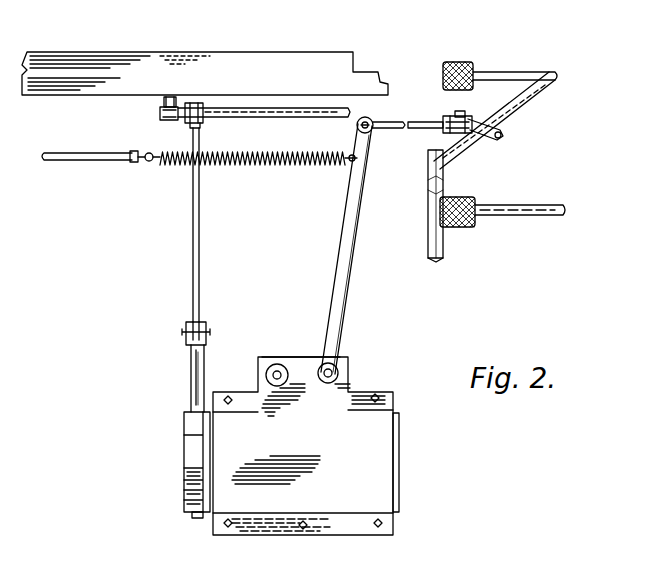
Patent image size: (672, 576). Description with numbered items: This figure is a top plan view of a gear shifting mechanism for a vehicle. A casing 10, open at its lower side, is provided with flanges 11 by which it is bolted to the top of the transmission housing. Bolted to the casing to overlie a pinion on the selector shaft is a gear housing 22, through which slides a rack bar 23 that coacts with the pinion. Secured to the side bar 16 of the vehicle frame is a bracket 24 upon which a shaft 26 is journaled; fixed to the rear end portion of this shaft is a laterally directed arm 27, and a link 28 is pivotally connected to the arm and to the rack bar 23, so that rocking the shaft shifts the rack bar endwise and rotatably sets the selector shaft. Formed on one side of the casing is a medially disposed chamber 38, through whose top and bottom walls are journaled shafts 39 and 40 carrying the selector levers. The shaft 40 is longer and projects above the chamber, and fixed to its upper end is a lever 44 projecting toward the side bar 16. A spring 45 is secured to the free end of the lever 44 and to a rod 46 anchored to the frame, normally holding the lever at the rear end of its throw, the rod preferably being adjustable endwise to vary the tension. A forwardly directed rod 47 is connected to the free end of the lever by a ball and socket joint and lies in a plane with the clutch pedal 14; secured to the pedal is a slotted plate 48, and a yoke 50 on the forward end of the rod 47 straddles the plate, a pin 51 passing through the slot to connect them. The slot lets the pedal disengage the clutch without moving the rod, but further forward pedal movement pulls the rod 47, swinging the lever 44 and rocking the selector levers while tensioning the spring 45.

The casing 10 is at (306, 446).
The flanges 11 is at (390, 397).
The clutch pedal 14 is at (528, 107).
The side bar 16 is at (298, 70).
The gear housing 22 is at (184, 466).
The rack bar 23 is at (196, 368).
The bracket 24 is at (163, 113).
The shaft 26 is at (268, 117).
The arm 27 is at (194, 103).
The link 28 is at (199, 235).
The chamber 38 is at (300, 358).
The shaft 39 is at (275, 371).
The shaft 40 is at (338, 372).
The lever 44 is at (348, 286).
The spring 45 is at (273, 167).
The rod 46 is at (66, 154).
The rod 47 is at (418, 122).
The plate 48 is at (499, 140).
The yoke 50 is at (450, 116).
The pin 51 is at (466, 113).